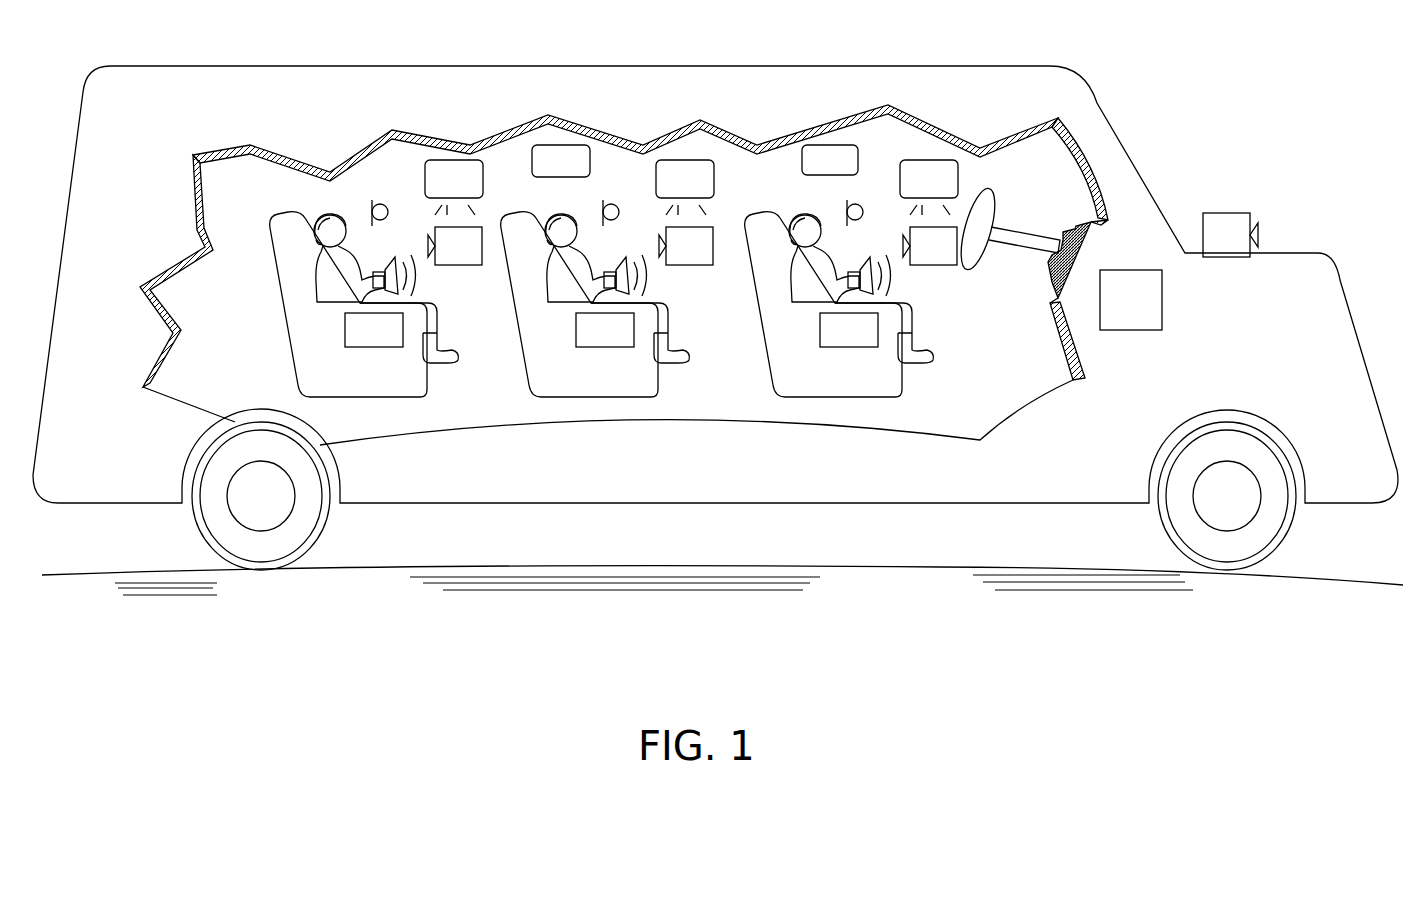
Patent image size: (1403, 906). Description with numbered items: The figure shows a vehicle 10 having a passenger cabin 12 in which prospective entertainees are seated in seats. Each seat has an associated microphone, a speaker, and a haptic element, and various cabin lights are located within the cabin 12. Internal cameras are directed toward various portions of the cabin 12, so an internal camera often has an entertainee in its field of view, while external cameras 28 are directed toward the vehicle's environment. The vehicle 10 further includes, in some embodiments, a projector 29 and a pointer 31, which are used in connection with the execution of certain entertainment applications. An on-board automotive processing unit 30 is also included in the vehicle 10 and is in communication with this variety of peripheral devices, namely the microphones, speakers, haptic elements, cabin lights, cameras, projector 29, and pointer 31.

The vehicle 10 is at (148, 125).
The passenger cabin 12 is at (243, 198).
The external camera 28 is at (1240, 247).
The projector 29 is at (575, 175).
The on-board automotive processing unit 30 is at (1145, 312).
The pointer 31 is at (844, 174).